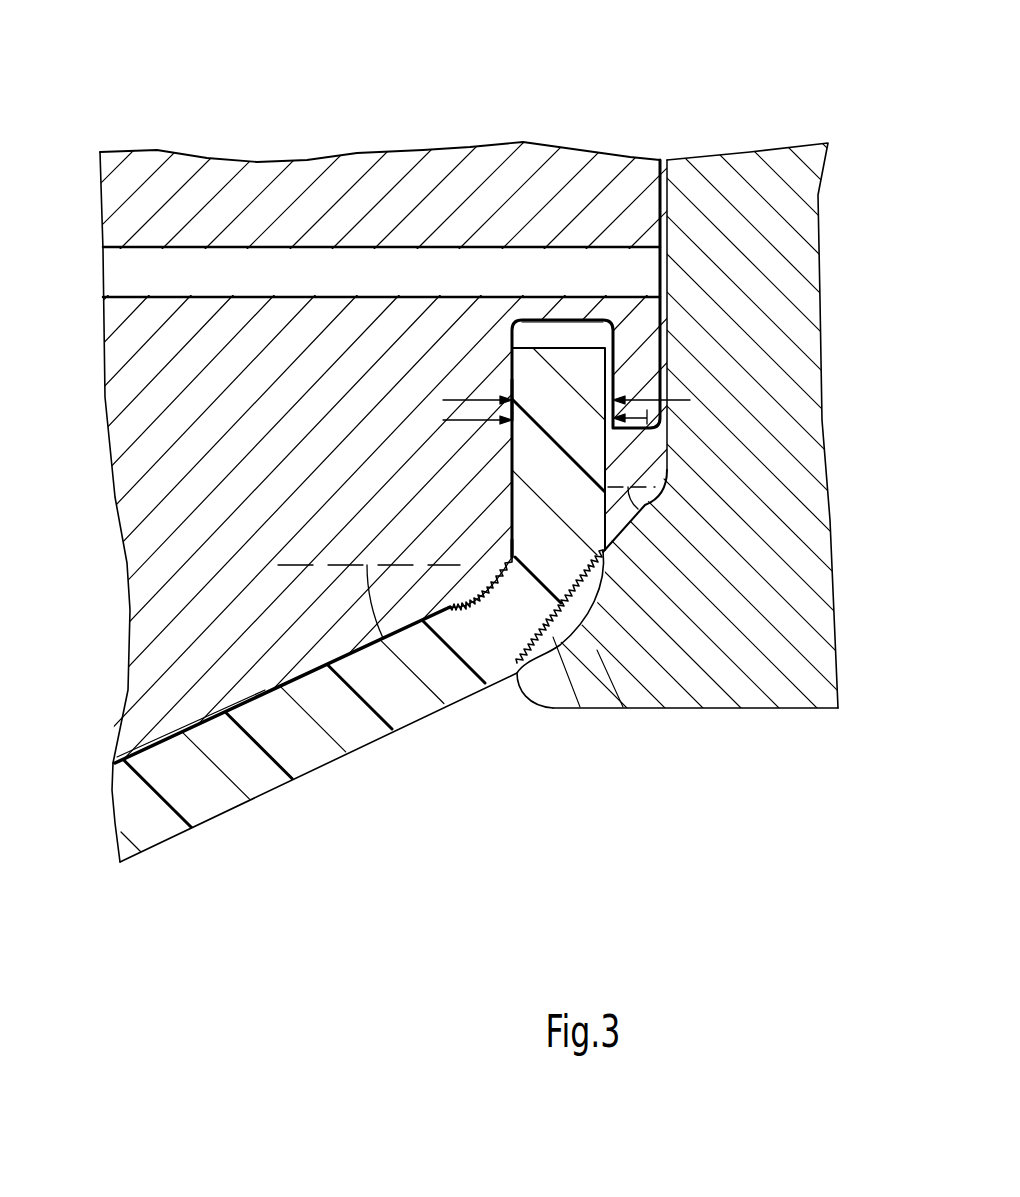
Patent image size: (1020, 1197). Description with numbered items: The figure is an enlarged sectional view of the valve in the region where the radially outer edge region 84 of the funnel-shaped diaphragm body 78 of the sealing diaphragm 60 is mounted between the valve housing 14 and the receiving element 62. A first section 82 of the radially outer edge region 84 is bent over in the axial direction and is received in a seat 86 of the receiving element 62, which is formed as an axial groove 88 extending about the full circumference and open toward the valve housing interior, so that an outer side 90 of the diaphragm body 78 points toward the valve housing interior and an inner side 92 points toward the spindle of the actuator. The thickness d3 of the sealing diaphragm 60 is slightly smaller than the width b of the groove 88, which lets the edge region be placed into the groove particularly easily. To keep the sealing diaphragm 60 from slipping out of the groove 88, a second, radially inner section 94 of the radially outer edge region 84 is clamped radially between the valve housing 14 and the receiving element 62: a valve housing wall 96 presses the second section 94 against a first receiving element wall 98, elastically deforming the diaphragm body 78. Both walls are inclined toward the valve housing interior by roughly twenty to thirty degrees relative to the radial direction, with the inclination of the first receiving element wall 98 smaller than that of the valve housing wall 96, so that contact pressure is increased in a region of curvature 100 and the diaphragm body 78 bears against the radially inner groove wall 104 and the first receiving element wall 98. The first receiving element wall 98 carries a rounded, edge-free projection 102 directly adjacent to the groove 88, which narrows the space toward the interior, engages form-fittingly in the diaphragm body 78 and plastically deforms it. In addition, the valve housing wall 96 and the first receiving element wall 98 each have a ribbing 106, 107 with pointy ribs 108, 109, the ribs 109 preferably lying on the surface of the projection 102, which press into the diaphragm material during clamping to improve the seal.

The valve housing 14 is at (813, 317).
The sealing diaphragm 60 is at (218, 866).
The receiving element 62 is at (177, 177).
The diaphragm body 78 is at (282, 767).
The first section 82 is at (577, 445).
The radially outer edge region 84 is at (673, 713).
The seat 86 is at (560, 326).
The axial groove 88 is at (587, 330).
The outer side 90 is at (140, 855).
The inner side 92 is at (135, 748).
The second section 94 is at (510, 560).
The valve housing wall 96 is at (742, 708).
The first receiving element wall 98 is at (243, 702).
The region of curvature 100 is at (623, 533).
The projection 102 is at (476, 600).
The radially inner groove wall 104 is at (512, 397).
The ribbing 106 is at (487, 603).
The ribbing 107 is at (457, 605).
The rib 108 is at (542, 591).
The rib 109 is at (475, 600).
The width of the groove b is at (690, 400).
The thickness of the sealing diaphragm d3 is at (647, 412).